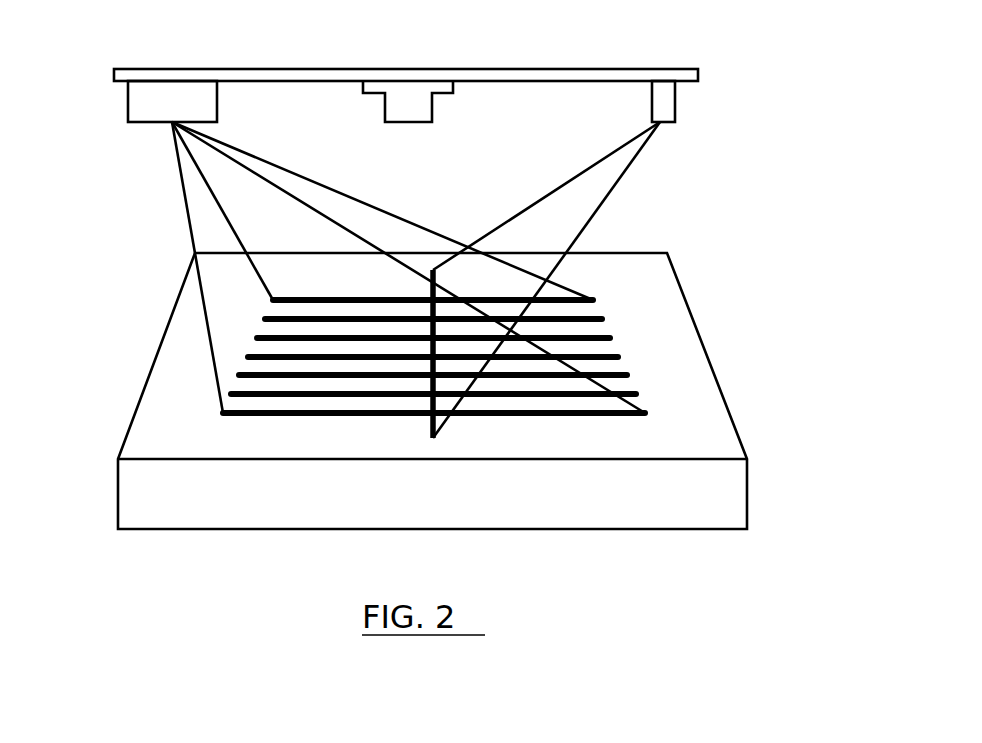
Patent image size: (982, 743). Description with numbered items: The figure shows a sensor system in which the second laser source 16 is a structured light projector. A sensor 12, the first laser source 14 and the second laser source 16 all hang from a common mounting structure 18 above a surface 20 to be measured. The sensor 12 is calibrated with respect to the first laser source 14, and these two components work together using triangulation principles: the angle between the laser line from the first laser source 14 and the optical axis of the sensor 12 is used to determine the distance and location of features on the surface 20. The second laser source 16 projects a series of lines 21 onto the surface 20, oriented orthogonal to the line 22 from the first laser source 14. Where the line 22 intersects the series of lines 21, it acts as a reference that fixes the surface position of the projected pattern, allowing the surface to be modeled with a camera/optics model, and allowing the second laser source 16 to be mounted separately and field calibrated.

The sensor 12 is at (432, 105).
The first laser source 14 is at (675, 102).
The second laser source 16 is at (217, 98).
The mounting structure 18 is at (300, 67).
The surface 20 is at (167, 377).
The series of lines 21 is at (596, 298).
The line 22 is at (430, 423).